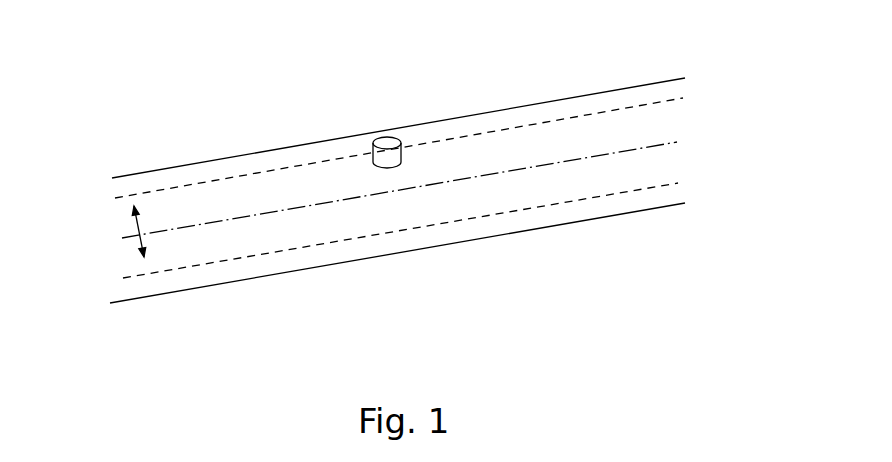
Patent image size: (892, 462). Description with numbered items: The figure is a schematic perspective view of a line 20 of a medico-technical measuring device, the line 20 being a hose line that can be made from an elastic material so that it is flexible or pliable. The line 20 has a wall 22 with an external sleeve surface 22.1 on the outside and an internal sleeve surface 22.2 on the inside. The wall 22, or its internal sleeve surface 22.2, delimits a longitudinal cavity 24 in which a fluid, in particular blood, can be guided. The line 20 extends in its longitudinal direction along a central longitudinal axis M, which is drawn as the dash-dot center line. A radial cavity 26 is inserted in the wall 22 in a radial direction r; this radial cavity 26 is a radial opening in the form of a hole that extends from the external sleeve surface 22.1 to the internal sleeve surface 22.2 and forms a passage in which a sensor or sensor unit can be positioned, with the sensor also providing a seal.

The line 20 is at (122, 140).
The wall 22 is at (207, 175).
The external sleeve surface 22.1 is at (625, 82).
The internal sleeve surface 22.2 is at (680, 182).
The longitudinal cavity 24 is at (235, 242).
The radial cavity 26 is at (388, 137).
The central longitudinal axis M is at (685, 140).
The radial direction r is at (147, 230).